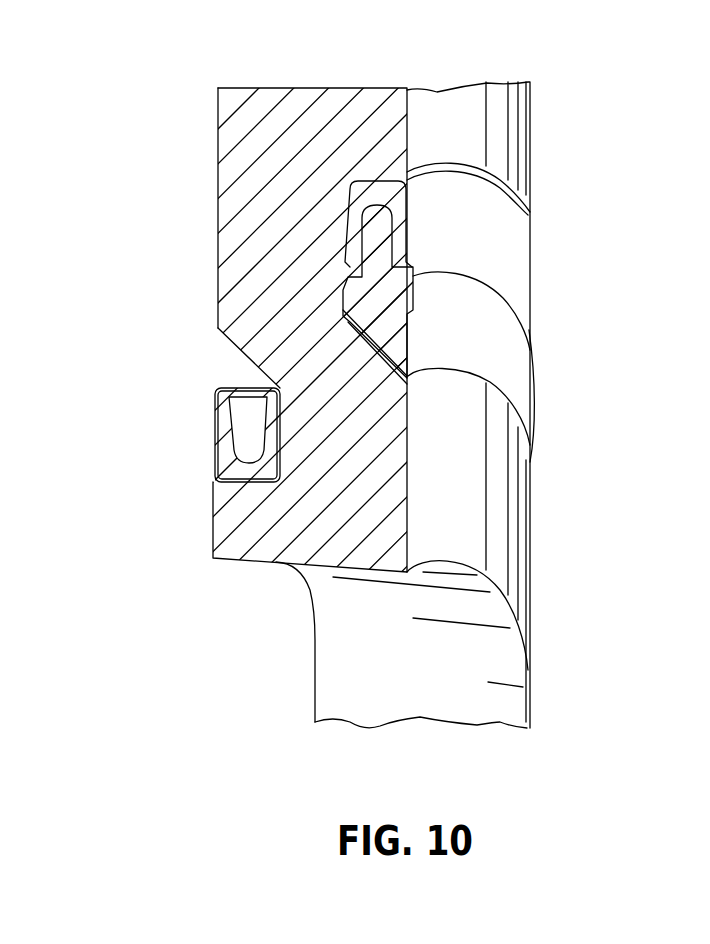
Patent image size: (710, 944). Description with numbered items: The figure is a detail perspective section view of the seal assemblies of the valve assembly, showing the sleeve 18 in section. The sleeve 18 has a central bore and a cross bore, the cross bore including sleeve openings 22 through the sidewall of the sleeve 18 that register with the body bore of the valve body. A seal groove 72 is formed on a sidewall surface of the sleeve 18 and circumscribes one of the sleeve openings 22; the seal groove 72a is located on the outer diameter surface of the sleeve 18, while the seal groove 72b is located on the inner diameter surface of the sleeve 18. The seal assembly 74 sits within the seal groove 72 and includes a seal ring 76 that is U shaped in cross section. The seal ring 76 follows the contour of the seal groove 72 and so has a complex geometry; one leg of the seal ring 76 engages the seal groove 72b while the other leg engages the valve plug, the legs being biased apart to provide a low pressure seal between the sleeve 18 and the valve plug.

The sleeve 18 is at (220, 213).
The sleeve openings 22 is at (345, 612).
The seal groove 72 is at (395, 355).
The seal groove 72a is at (378, 340).
The seal groove 72b is at (228, 342).
The seal assembly 74 is at (556, 236).
The seal ring 76 is at (217, 440).